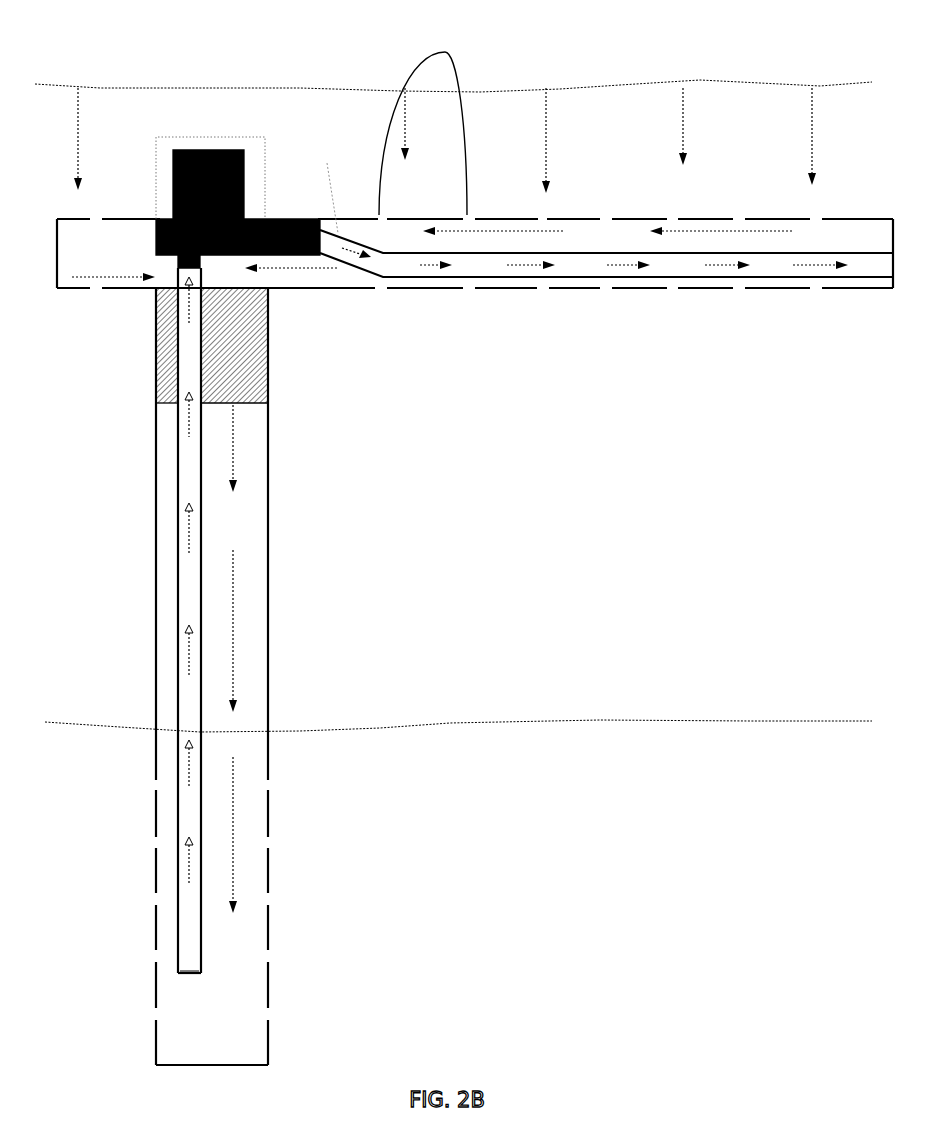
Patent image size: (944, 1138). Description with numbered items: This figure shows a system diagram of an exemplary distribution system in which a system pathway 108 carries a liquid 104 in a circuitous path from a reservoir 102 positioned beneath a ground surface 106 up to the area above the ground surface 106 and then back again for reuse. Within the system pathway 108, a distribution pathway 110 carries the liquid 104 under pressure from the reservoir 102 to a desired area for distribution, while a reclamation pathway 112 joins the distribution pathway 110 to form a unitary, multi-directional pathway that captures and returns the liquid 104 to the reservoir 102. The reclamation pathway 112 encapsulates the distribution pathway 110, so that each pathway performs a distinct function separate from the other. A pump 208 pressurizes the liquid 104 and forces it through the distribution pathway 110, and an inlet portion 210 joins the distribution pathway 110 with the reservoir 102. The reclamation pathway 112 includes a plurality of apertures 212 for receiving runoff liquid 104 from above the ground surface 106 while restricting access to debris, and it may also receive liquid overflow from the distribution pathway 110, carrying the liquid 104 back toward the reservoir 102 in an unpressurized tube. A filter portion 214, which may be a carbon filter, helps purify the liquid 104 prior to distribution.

The reservoir 102 is at (427, 722).
The liquid 104 is at (683, 108).
The ground surface 106 is at (613, 78).
The system pathway 108 is at (268, 482).
The distribution pathway 110 is at (177, 450).
The reclamation pathway 112 is at (573, 290).
The pump 208 is at (245, 150).
The inlet portion 210 is at (187, 978).
The apertures 212 is at (425, 124).
The filter portion 214 is at (248, 322).